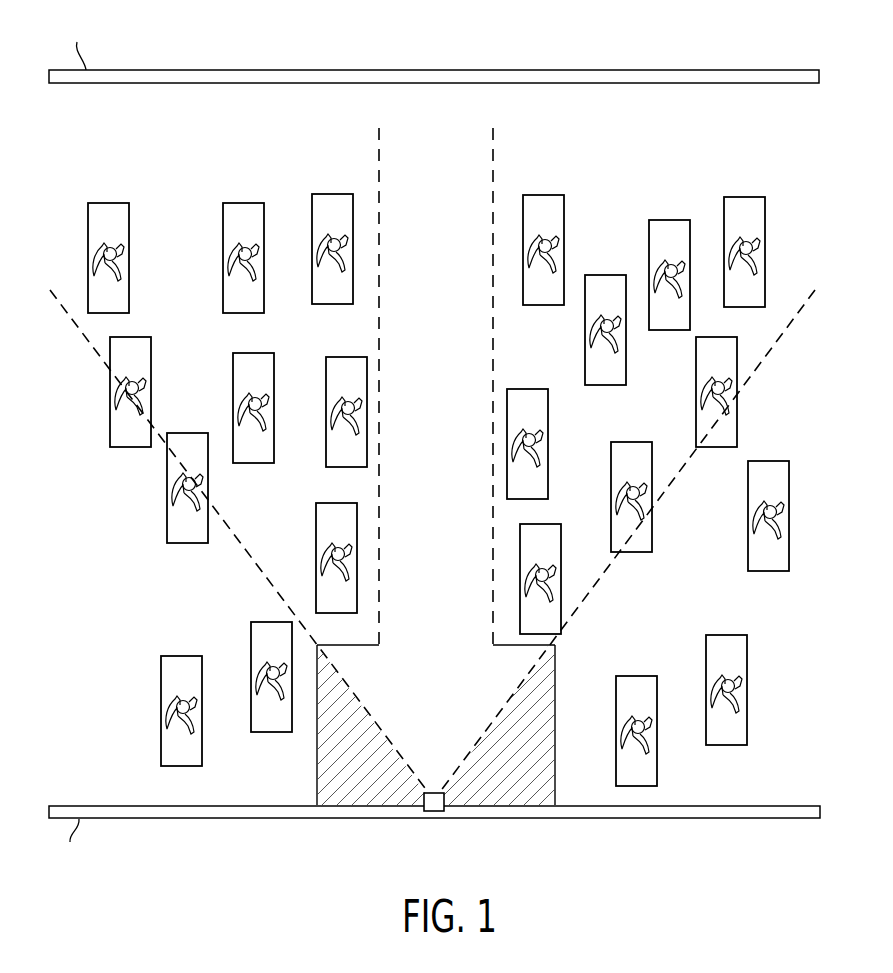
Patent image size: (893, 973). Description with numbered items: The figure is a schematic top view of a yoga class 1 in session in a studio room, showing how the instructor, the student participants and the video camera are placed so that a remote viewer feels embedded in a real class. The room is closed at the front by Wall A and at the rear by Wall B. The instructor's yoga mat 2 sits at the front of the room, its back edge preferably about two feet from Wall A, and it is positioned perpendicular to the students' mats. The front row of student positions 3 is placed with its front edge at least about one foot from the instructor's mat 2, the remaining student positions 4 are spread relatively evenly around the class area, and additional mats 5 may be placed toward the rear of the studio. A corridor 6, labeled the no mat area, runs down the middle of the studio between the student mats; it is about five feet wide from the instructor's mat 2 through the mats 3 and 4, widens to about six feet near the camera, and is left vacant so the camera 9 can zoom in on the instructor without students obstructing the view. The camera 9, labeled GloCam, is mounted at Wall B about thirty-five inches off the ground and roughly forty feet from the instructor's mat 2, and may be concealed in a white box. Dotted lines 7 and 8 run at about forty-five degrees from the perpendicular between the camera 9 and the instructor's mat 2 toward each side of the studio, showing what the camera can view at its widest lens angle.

The yoga class 1 is at (647, 137).
The instructor's yoga mat 2 is at (497, 143).
The front row of student positions 3 is at (109, 203).
The student positions 4 is at (326, 380).
The additional mats 5 is at (770, 462).
The corridor 6 is at (455, 377).
The dotted line 7 is at (518, 685).
The dotted line 8 is at (365, 702).
The camera 9 is at (435, 812).